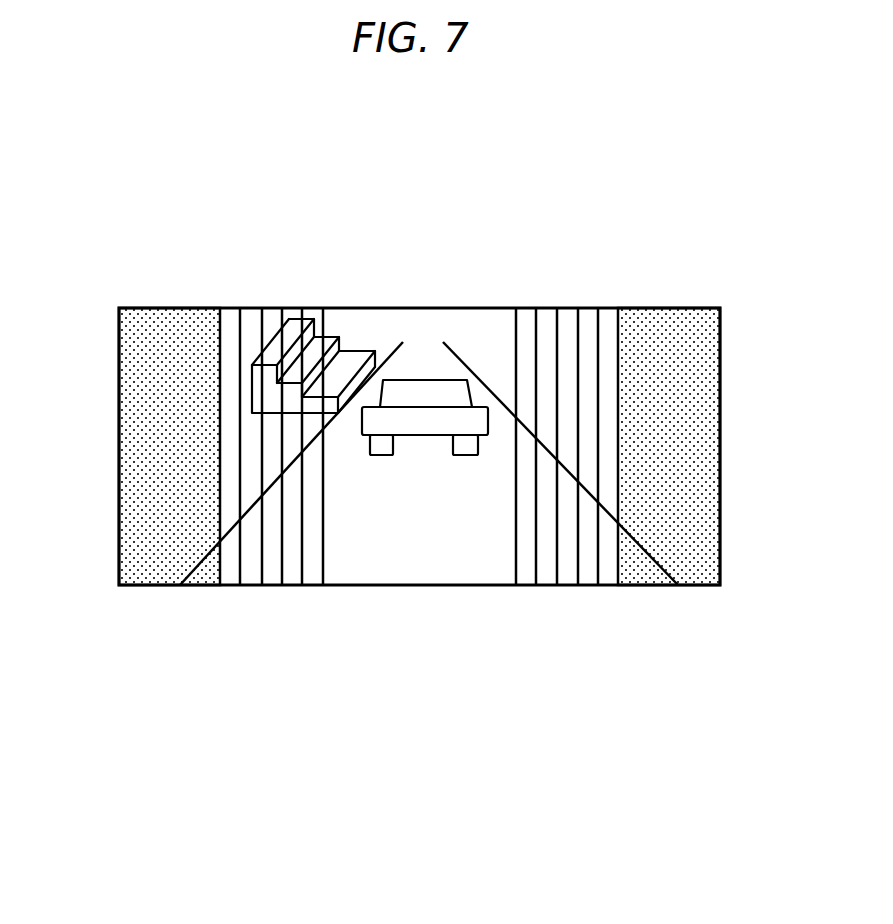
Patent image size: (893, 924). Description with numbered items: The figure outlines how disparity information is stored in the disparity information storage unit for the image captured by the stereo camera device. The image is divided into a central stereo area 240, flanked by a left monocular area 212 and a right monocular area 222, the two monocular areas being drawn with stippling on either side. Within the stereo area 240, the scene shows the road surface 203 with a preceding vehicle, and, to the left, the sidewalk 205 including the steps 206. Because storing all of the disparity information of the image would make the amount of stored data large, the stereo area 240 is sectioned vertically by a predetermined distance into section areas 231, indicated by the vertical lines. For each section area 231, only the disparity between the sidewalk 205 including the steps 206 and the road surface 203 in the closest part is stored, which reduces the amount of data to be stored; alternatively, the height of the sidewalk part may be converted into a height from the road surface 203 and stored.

The road surface 203 is at (465, 533).
The sidewalk 205 is at (375, 310).
The steps 206 is at (338, 308).
The left monocular area 212 is at (140, 585).
The right monocular area 222 is at (700, 585).
The section area 231 is at (232, 308).
The stereo area 240 is at (415, 585).